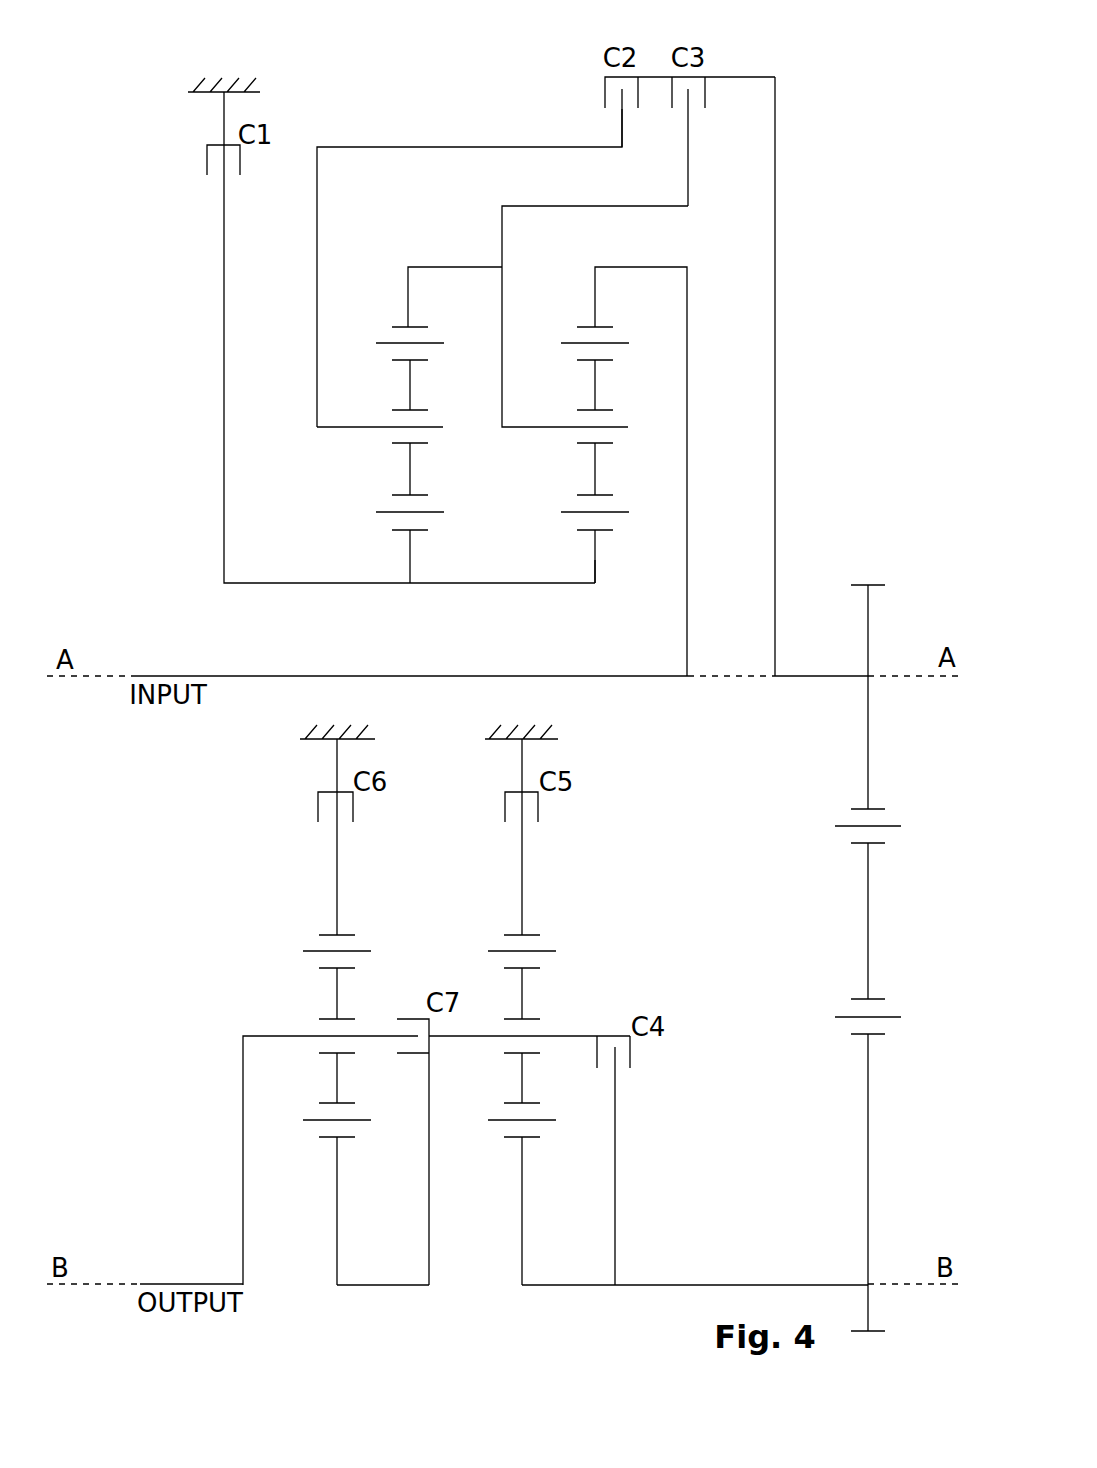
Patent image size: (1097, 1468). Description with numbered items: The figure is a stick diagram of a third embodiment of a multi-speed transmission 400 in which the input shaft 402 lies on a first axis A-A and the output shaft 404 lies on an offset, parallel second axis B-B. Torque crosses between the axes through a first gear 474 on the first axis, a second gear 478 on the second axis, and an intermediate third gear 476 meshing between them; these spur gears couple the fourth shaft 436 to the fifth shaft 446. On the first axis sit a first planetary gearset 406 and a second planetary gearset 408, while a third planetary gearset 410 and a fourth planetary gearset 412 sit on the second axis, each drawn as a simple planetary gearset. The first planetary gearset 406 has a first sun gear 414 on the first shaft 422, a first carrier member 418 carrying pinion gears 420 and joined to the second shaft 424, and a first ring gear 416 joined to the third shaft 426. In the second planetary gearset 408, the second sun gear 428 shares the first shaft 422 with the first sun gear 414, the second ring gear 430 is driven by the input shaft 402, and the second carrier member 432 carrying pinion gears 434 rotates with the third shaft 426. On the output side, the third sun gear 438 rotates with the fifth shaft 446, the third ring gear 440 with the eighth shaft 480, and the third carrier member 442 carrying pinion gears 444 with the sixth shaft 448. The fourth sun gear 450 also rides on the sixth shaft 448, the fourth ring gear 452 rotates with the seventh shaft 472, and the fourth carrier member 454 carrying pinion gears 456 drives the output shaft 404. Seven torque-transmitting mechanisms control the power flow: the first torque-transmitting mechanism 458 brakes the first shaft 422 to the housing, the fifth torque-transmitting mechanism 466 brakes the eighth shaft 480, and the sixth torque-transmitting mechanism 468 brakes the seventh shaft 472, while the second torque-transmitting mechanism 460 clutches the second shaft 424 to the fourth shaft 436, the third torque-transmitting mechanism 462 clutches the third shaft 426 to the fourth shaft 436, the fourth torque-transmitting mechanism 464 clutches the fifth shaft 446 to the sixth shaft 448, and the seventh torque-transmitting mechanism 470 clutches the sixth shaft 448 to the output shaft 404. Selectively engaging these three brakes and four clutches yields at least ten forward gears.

The multi-speed transmission 400 is at (863, 172).
The input shaft 402 is at (163, 676).
The output shaft 404 is at (163, 1284).
The first planetary gearset 406 is at (410, 590).
The second planetary gearset 408 is at (595, 590).
The third planetary gearset 410 is at (522, 1290).
The fourth planetary gearset 412 is at (337, 1290).
The first sun gear 414 is at (383, 520).
The first ring gear 416 is at (397, 320).
The first carrier member 418 is at (385, 435).
The pinion gears 420 is at (420, 410).
The first shaft 422 is at (224, 358).
The second shaft 424 is at (373, 147).
The third shaft 426 is at (448, 267).
The second sun gear 428 is at (603, 540).
The second ring gear 430 is at (583, 320).
The second carrier member 432 is at (575, 440).
The pinion gears 434 is at (605, 410).
The fourth shaft 436 is at (775, 340).
The third sun gear 438 is at (530, 1140).
The third ring gear 440 is at (537, 925).
The third carrier member 442 is at (537, 1015).
The pinion gears 444 is at (535, 1055).
The fifth shaft 446 is at (705, 1285).
The sixth shaft 448 is at (465, 1037).
The fourth sun gear 450 is at (323, 1140).
The fourth ring gear 452 is at (350, 925).
The fourth carrier member 454 is at (350, 1015).
The pinion gears 456 is at (327, 1020).
The first torque-transmitting mechanism 458 is at (207, 165).
The second torque-transmitting mechanism 460 is at (605, 95).
The third torque-transmitting mechanism 462 is at (707, 92).
The fourth torque-transmitting mechanism 464 is at (630, 1053).
The fifth torque-transmitting mechanism 466 is at (505, 808).
The sixth torque-transmitting mechanism 468 is at (318, 808).
The seventh torque-transmitting mechanism 470 is at (413, 1055).
The seventh shaft 472 is at (337, 870).
The first gear 474 is at (868, 738).
The third gear 476 is at (868, 920).
The second gear 478 is at (868, 1130).
The eighth shaft 480 is at (522, 857).